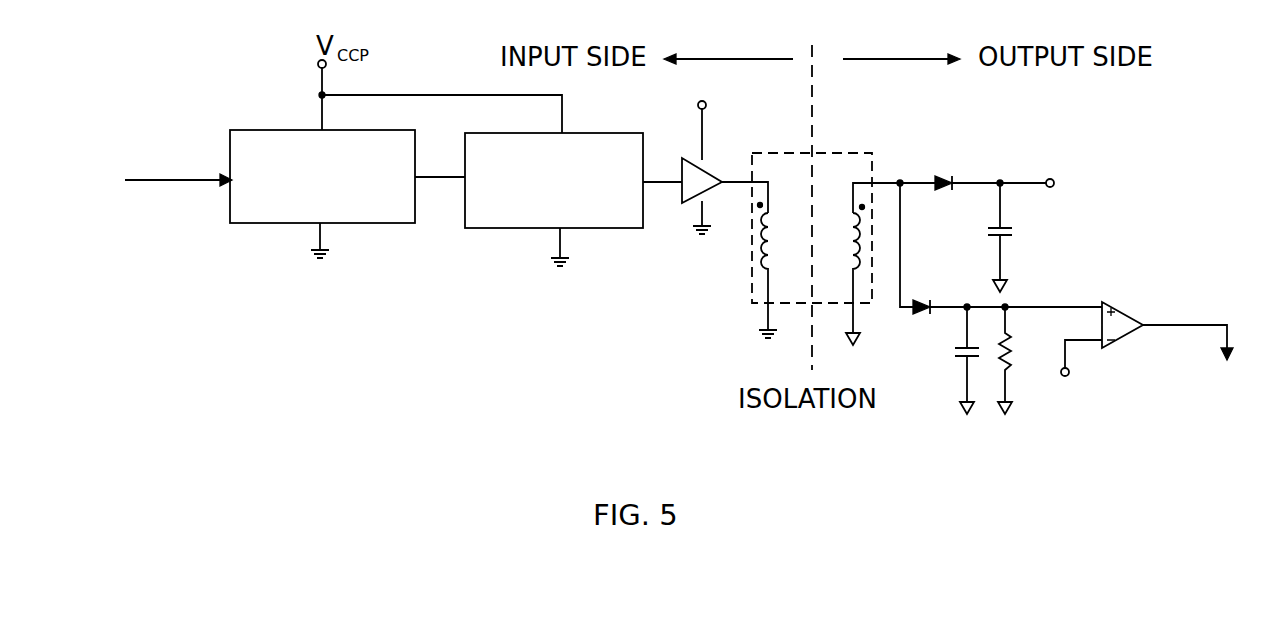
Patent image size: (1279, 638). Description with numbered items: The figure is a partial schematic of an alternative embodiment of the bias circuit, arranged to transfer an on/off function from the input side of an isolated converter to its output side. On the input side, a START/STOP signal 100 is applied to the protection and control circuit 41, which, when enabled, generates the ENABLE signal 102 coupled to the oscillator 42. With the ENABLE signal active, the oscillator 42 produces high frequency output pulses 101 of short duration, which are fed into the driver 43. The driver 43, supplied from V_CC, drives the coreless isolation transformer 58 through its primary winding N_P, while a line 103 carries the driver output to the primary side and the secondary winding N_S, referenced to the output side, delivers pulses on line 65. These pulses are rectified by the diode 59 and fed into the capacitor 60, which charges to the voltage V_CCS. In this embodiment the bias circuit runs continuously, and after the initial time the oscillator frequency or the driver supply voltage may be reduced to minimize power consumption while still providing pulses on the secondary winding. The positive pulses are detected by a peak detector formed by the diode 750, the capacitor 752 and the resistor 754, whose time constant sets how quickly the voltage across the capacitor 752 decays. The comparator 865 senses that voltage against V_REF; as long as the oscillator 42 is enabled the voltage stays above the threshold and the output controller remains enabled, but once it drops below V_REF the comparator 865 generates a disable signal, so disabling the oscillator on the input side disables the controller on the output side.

The protection and control circuit 41 is at (276, 130).
The oscillator 42 is at (610, 114).
The driver 43 is at (684, 159).
The coreless isolation transformer 58 is at (833, 154).
The rectifying diode 59 is at (944, 180).
The capacitor 60 is at (1005, 243).
The secondary winding output line 65 is at (878, 182).
The START/STOP signal 100 is at (184, 183).
The output pulses 101 is at (676, 184).
The ENABLE input signal 102 is at (453, 179).
The primary winding input line 103 is at (726, 181).
The diode 750 is at (922, 300).
The capacitor 752 is at (960, 362).
The resistor 754 is at (1013, 358).
The comparator 865 is at (1112, 302).